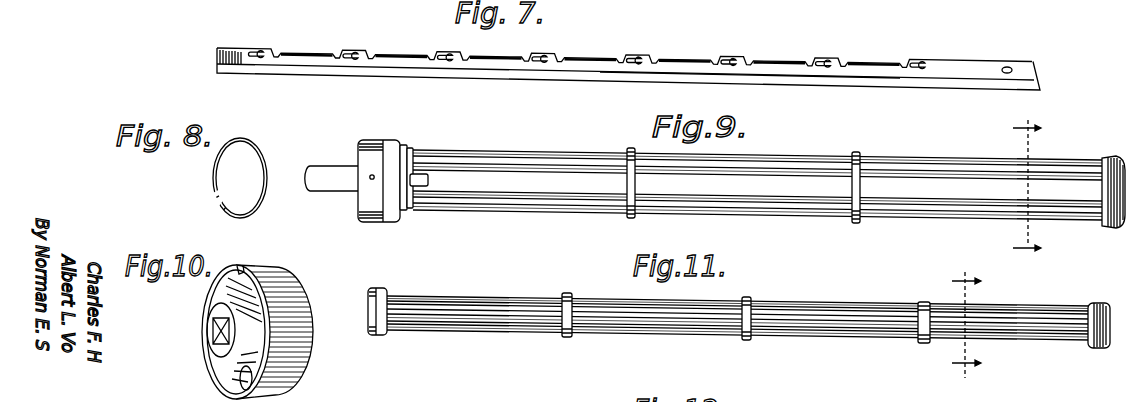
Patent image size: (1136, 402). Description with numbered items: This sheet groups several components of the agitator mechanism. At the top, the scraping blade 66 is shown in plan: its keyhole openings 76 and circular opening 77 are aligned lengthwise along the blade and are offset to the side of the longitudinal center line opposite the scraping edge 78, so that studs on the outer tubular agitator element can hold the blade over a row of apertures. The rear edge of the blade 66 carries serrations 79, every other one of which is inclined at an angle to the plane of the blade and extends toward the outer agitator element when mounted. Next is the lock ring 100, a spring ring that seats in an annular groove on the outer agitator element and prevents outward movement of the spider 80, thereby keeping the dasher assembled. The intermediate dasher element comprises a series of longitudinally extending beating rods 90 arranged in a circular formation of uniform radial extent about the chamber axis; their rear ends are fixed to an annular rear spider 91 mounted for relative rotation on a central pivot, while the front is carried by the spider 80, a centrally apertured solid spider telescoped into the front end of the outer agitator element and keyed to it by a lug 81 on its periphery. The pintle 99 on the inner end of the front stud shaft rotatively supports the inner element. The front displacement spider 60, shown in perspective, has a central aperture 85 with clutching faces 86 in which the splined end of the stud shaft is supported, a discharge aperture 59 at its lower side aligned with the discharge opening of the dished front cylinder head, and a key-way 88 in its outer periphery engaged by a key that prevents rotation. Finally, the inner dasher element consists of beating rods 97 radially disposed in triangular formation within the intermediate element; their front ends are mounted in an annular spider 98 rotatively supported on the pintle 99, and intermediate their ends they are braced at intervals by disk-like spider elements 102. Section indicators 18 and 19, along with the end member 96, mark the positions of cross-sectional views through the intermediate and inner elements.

In FIG. 7, the scraping blade 66 is at (967, 70).
In FIG. 7, the keyhole openings 76 is at (355, 56).
In FIG. 7, the circular opening 77 is at (1011, 67).
In FIG. 7, the scraping edge 78 is at (847, 83).
In FIG. 7, the serrations 79 is at (347, 50).
In FIG. 8, the lock ring 100 is at (214, 170).
In FIG. 9, the spider element 80 is at (377, 140).
In FIG. 9, the lug 81 is at (370, 180).
In FIG. 9, the beating rods 90 is at (517, 172).
In FIG. 9, the annular rear spider 91 is at (630, 183).
In FIG. 9, the central pintle 99 is at (423, 186).
In FIG. 9, the section line 18- 18 is at (1018, 187).
In FIG. 10, the front displacement spider 60 is at (262, 345).
In FIG. 10, the key-way 88 is at (241, 269).
In FIG. 10, the central aperture 85 is at (208, 326).
In FIG. 10, the clutching faces 86 is at (211, 340).
In FIG. 10, the discharge aperture 59 is at (232, 386).
In FIG. 11, the beating rods 97 is at (821, 331).
In FIG. 11, the annular spider 98 is at (378, 335).
In FIG. 11, the end cap 96 is at (1092, 348).
In FIG. 11, the disk-like spider elements 102 is at (565, 337).
In FIG. 11, the section line 19- 19 is at (957, 324).